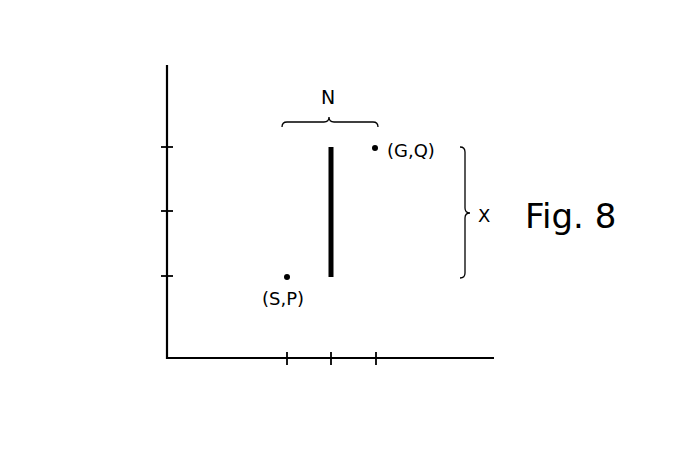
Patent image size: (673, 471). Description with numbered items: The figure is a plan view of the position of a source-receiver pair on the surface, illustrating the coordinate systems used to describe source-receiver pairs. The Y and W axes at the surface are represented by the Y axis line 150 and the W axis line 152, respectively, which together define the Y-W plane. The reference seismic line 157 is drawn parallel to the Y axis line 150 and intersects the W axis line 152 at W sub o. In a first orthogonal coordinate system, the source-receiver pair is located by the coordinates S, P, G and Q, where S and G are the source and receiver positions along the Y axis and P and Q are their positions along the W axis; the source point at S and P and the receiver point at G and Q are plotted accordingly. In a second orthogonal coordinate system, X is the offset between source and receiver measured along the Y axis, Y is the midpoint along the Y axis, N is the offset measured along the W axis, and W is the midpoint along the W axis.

The Y axis line 150 is at (166, 100).
The W axis line 152 is at (410, 359).
The reference seismic line 157 is at (334, 221).